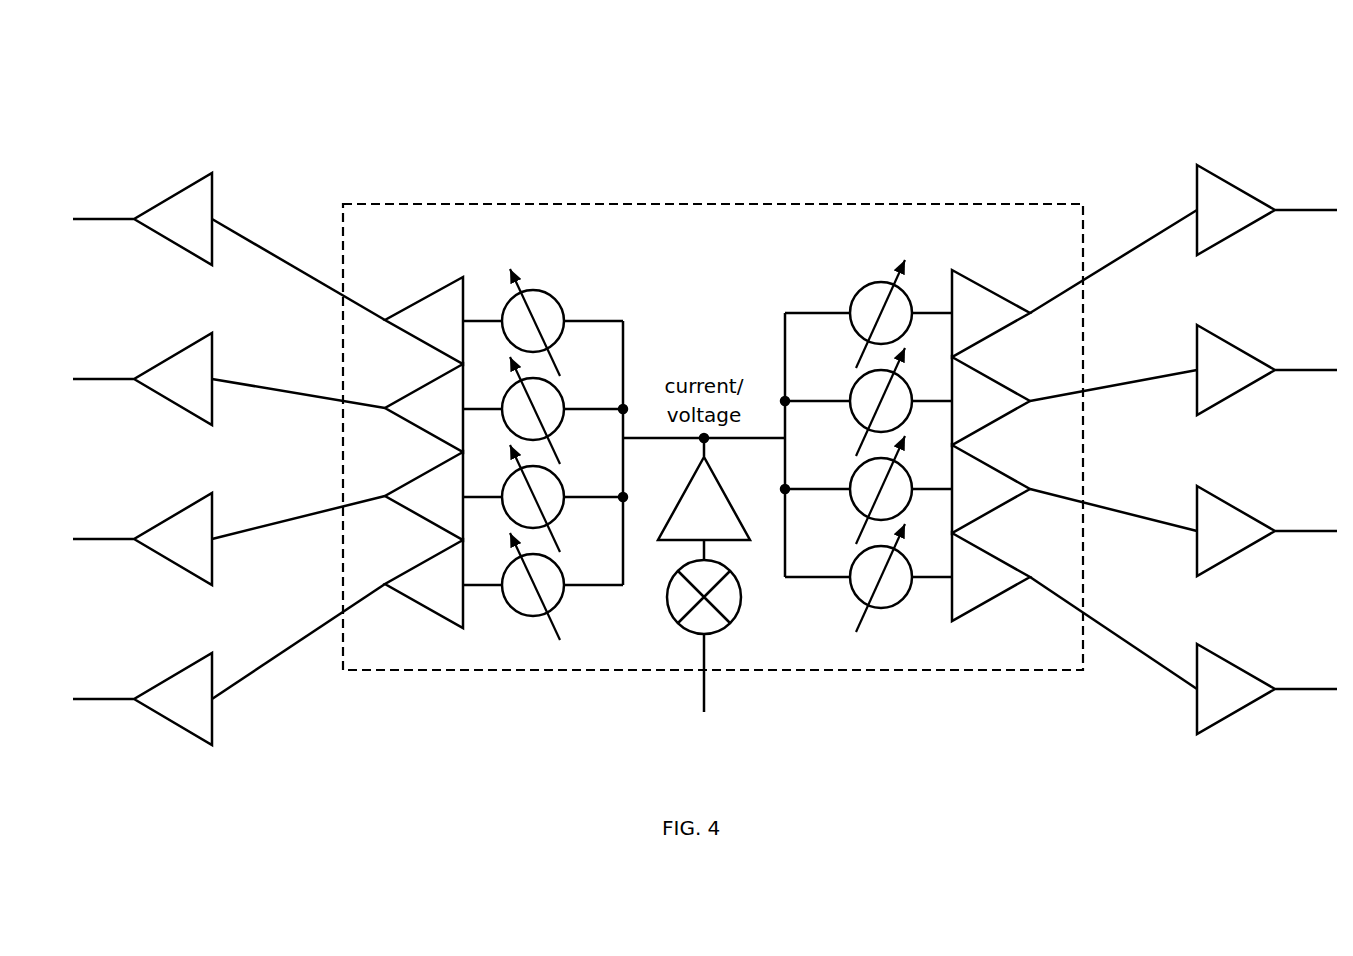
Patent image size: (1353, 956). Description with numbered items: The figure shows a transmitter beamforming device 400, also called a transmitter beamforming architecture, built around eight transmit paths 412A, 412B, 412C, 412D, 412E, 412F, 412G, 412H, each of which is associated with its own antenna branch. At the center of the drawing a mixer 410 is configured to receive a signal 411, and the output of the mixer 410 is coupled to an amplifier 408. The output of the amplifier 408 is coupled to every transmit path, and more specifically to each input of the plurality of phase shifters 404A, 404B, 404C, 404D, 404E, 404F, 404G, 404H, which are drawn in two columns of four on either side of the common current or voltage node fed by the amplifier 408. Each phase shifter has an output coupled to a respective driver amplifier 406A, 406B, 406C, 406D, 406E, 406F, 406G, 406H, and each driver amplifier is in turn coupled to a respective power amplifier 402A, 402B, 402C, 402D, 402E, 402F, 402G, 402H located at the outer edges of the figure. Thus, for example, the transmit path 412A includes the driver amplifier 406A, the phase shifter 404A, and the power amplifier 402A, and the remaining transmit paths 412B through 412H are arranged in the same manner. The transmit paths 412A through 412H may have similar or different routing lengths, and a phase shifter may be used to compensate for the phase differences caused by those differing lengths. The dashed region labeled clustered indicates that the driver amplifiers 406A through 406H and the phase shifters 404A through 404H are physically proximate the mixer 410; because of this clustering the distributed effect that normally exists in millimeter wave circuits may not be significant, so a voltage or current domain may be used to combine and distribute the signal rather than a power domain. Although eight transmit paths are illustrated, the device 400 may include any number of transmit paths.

The device 400 is at (838, 100).
The power amplifier 402A is at (176, 194).
The power amplifier 402B is at (176, 354).
The power amplifier 402C is at (176, 514).
The power amplifier 402D is at (176, 674).
The power amplifier 402E is at (1233, 186).
The power amplifier 402F is at (1233, 346).
The power amplifier 402G is at (1233, 507).
The power amplifier 402H is at (1233, 665).
The phase shifter 404A is at (557, 301).
The phase shifter 404B is at (557, 389).
The phase shifter 404C is at (557, 477).
The phase shifter 404D is at (557, 565).
The phase shifter 404E is at (857, 293).
The phase shifter 404F is at (857, 381).
The phase shifter 404G is at (857, 469).
The phase shifter 404H is at (857, 557).
The driver amplifier 406A is at (425, 343).
The driver amplifier 406B is at (427, 433).
The driver amplifier 406C is at (427, 520).
The driver amplifier 406D is at (427, 608).
The driver amplifier 406E is at (990, 336).
The driver amplifier 406F is at (990, 424).
The driver amplifier 406G is at (990, 512).
The driver amplifier 406H is at (990, 600).
The amplifier 408 is at (716, 479).
The mixer 410 is at (729, 623).
The signal 411 is at (706, 690).
The transmit path 412A is at (278, 216).
The transmit path 412B is at (276, 362).
The transmit path 412C is at (259, 516).
The transmit path 412D is at (259, 627).
The transmit path 412E is at (1105, 218).
The transmit path 412F is at (1127, 346).
The transmit path 412G is at (1133, 486).
The transmit path 412H is at (1133, 621).